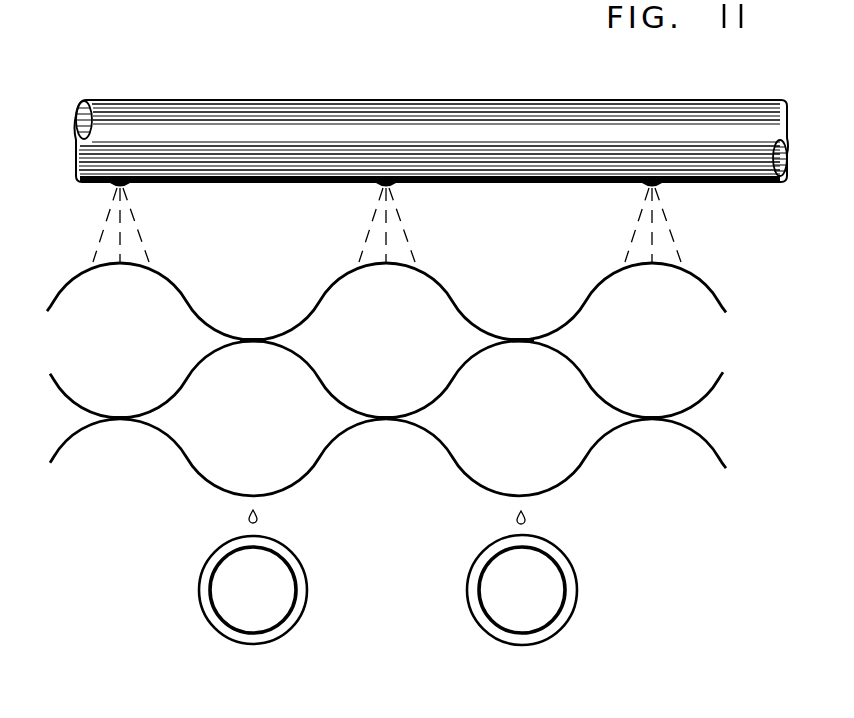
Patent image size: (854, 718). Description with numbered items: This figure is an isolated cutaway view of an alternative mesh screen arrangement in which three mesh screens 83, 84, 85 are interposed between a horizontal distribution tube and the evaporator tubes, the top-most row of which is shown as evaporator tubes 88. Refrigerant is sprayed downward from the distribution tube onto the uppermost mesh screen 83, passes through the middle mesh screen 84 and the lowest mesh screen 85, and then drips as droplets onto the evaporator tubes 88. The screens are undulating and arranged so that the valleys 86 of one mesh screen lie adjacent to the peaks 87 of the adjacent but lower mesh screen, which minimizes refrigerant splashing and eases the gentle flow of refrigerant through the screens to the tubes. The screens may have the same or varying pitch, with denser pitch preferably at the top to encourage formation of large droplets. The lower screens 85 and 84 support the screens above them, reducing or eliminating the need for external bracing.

The mesh screen 83 is at (706, 286).
The mesh screen 84 is at (722, 388).
The mesh screen 85 is at (728, 462).
The valleys 86 is at (255, 340).
The peaks 87 is at (256, 341).
The top-most row of evaporator tubes 88 is at (307, 596).